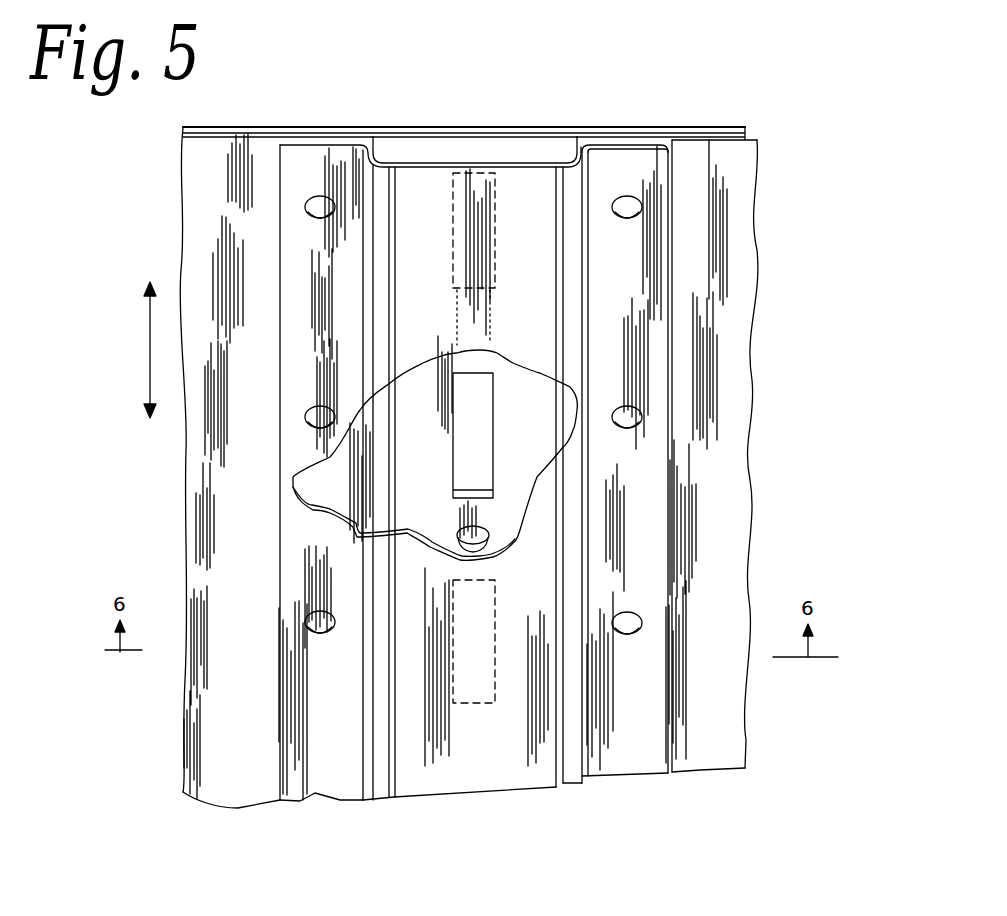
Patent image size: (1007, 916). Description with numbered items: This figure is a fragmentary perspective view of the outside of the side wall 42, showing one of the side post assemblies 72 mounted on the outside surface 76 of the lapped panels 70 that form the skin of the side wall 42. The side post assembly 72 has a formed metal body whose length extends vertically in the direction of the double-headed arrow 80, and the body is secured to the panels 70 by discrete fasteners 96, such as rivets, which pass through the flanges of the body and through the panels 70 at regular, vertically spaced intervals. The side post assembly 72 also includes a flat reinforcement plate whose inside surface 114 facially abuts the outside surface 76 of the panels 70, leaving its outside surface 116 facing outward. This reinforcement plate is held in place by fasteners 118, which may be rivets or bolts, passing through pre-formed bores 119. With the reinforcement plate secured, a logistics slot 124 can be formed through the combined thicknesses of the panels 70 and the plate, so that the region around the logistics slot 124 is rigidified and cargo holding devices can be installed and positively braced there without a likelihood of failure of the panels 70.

The side wall 42 is at (752, 482).
The panel 70 is at (683, 163).
The side post assembly 72 is at (590, 117).
The outside surface 76 is at (717, 697).
The double-headed arrow 80 is at (150, 350).
The fastener 96 is at (307, 200).
The inside surface 114 is at (505, 136).
The outside surface 116 is at (418, 148).
The fastener 118 is at (480, 342).
The pre-formed bore 119 is at (487, 555).
The logistics slot 124 is at (497, 210).